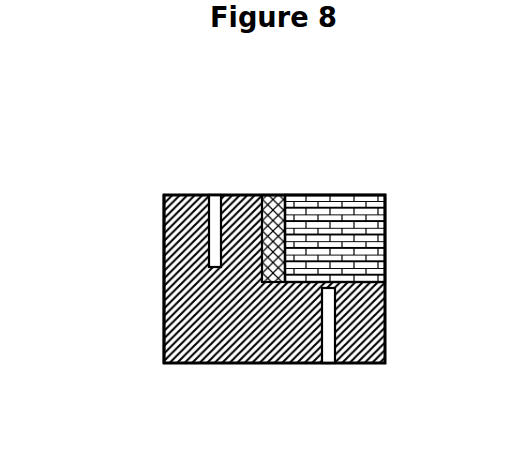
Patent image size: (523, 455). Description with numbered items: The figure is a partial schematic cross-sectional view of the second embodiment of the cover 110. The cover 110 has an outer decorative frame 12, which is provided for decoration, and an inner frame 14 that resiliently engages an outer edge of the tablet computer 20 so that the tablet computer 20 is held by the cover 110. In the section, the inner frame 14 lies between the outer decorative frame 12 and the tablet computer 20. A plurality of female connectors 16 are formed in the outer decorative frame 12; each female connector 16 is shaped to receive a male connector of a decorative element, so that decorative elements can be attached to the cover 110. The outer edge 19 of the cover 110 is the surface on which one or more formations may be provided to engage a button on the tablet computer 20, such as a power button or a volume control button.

The cover 110 is at (142, 282).
The outer decorative frame 12 is at (198, 363).
The outer edge 19 is at (164, 303).
The female connectors 16 is at (212, 195).
The inner frame 14 is at (275, 195).
The tablet computer 20 is at (330, 195).